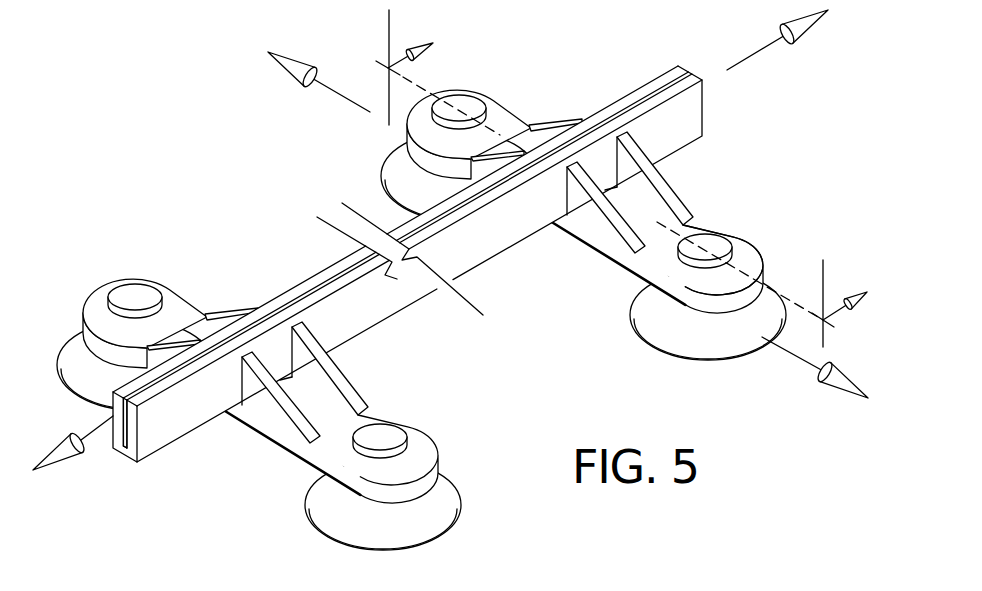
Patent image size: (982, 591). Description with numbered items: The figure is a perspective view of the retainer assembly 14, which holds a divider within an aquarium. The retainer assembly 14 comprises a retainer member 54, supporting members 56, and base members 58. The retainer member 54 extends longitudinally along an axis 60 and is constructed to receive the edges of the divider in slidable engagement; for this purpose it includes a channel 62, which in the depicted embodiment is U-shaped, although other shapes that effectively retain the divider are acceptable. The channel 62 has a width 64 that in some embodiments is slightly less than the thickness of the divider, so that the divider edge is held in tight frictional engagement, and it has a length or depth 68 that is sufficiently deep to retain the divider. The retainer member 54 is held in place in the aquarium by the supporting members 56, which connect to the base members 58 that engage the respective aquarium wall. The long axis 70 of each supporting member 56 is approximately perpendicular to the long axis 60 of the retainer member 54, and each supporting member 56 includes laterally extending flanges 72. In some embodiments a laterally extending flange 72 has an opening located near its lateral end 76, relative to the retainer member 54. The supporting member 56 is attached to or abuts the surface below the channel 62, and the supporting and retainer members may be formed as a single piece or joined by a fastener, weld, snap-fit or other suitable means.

The retainer assembly 14 is at (263, 163).
The retainer member 54 is at (705, 107).
The supporting member 56 is at (107, 258).
The base member 58 is at (767, 261).
The axis 60 is at (752, 56).
The channel 62 is at (327, 287).
The width 64 is at (113, 398).
The depth 68 is at (120, 411).
The long axis 70 is at (336, 94).
The laterally extending flange 72 is at (183, 297).
The lateral end 76 is at (82, 298).